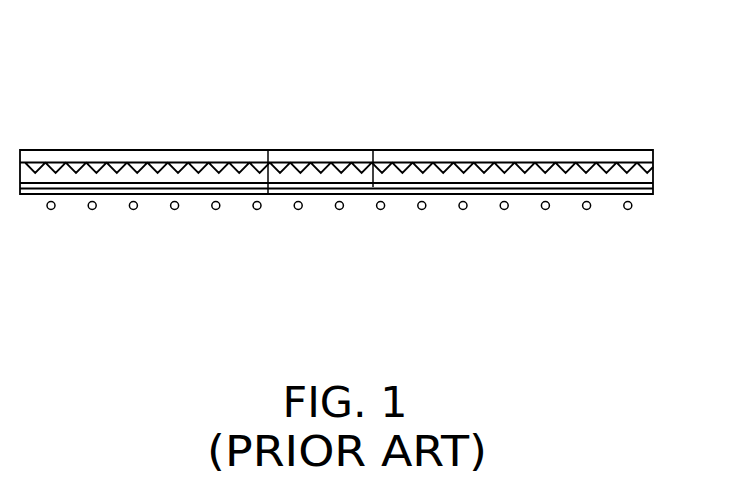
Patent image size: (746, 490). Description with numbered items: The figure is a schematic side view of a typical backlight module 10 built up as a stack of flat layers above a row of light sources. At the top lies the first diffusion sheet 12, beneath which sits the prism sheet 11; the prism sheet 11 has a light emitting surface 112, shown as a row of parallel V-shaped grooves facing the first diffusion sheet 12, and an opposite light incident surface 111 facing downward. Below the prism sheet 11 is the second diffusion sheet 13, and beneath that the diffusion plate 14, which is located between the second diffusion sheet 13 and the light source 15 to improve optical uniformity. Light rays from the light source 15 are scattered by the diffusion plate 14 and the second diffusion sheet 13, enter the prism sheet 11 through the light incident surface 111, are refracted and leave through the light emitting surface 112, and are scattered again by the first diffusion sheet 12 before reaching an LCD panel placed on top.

The backlight module 10 is at (353, 57).
The prism sheet 11 is at (432, 163).
The light incident surface 111 is at (637, 190).
The light emitting surface 112 is at (653, 163).
The first diffusion sheet 12 is at (537, 150).
The second diffusion sheet 13 is at (373, 150).
The diffusion plate 14 is at (268, 150).
The light source 15 is at (504, 207).